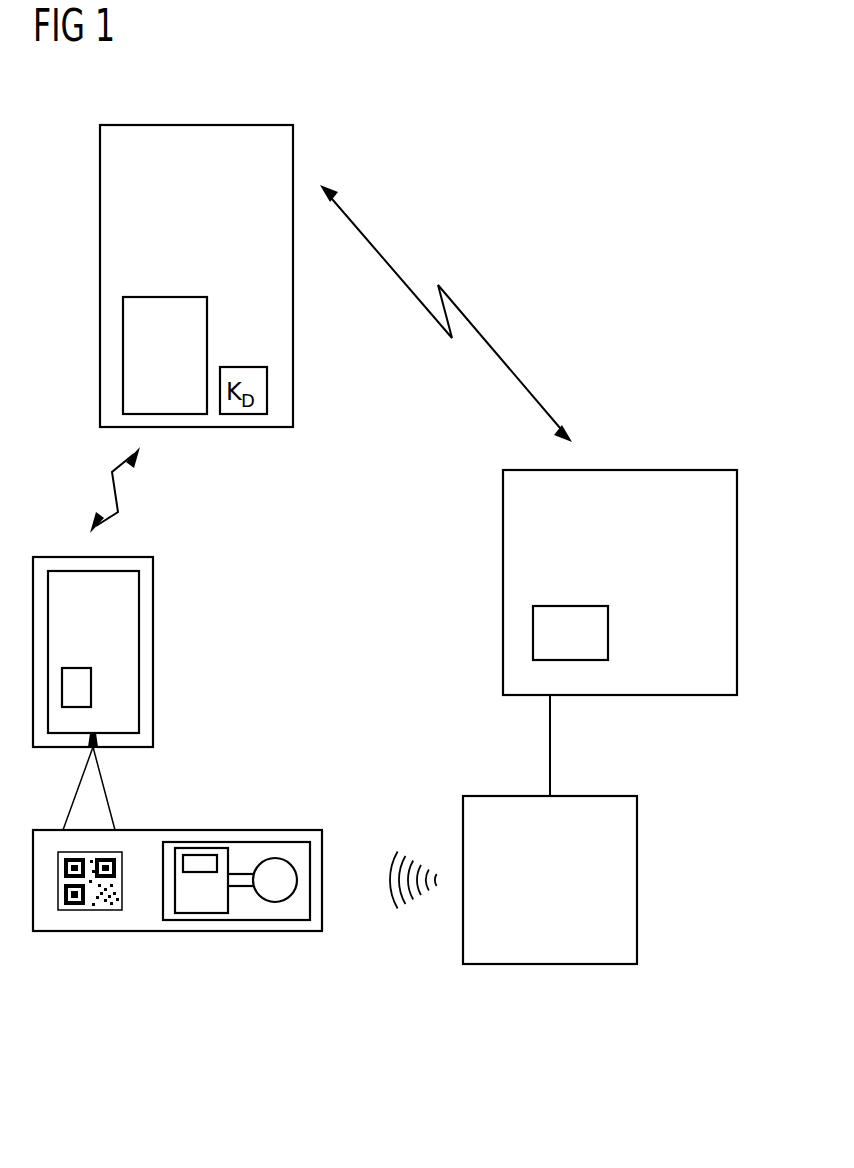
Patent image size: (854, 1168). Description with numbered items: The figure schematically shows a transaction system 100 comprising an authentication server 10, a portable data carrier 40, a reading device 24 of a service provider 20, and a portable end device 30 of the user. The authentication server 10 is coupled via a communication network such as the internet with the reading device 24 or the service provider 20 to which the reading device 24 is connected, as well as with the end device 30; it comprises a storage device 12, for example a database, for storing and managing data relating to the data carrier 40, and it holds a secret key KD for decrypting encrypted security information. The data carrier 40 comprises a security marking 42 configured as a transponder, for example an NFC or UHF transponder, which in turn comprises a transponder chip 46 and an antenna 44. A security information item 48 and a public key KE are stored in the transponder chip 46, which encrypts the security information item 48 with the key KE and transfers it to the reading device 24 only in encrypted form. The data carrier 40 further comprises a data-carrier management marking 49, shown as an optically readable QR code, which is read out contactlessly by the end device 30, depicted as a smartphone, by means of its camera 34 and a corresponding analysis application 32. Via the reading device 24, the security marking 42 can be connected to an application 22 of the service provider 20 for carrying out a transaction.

The transaction system 100 is at (615, 96).
The authentication server 10 is at (196, 125).
The storage device 12 is at (163, 297).
The service provider 20 is at (618, 470).
The application 22 is at (572, 606).
The reading device 24 is at (637, 880).
The portable end device 30 is at (153, 652).
The analysis application 32 is at (75, 668).
The camera 34 is at (95, 735).
The portable data carrier 40 is at (143, 931).
The security marking 42 is at (253, 842).
The antenna 44 is at (275, 902).
The transponder chip 46 is at (210, 913).
The security information item 48 is at (200, 855).
The data-carrier management marking 49 is at (90, 910).